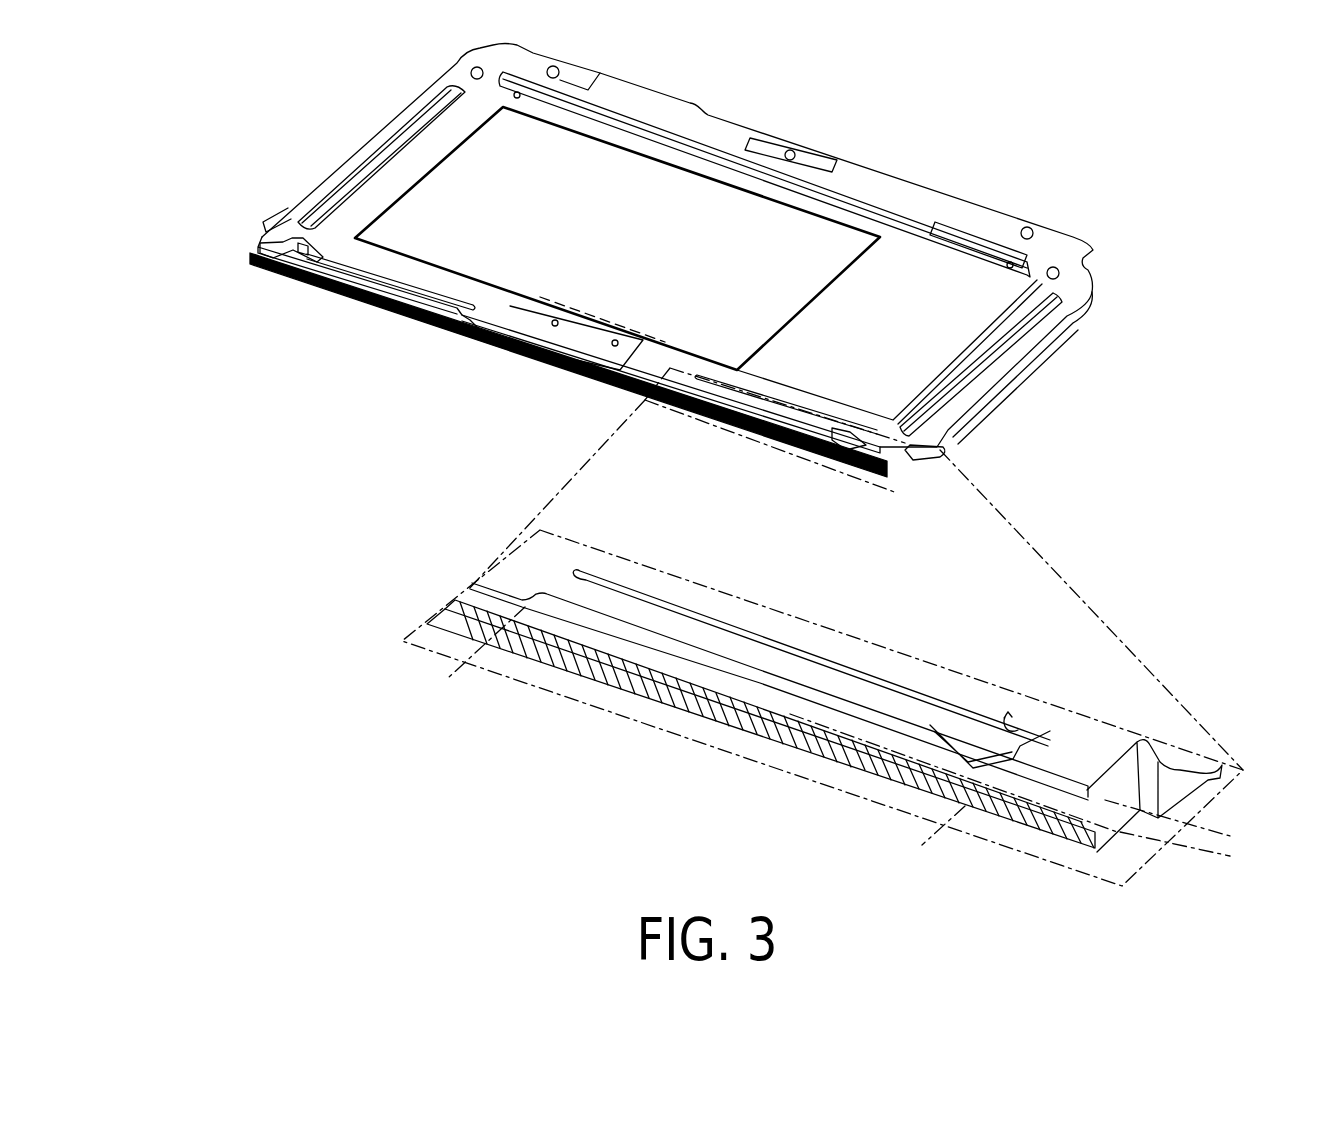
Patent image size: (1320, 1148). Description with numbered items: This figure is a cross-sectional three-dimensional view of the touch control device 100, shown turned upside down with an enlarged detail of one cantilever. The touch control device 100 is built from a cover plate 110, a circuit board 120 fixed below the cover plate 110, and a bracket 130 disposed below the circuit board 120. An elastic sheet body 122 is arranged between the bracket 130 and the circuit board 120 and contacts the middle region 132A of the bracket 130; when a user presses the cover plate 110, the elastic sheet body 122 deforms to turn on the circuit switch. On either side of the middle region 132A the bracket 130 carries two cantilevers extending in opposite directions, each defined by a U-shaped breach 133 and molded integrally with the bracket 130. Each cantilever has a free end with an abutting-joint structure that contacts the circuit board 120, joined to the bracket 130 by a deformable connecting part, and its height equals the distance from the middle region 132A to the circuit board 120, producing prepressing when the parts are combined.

The touch control device 100 is at (208, 875).
The cover plate 110 is at (1086, 304).
The circuit board 120 is at (1090, 278).
The elastic sheet body 122 is at (562, 368).
The bracket 130 is at (1078, 243).
The middle region 132A is at (493, 343).
The breach 133 is at (268, 255).